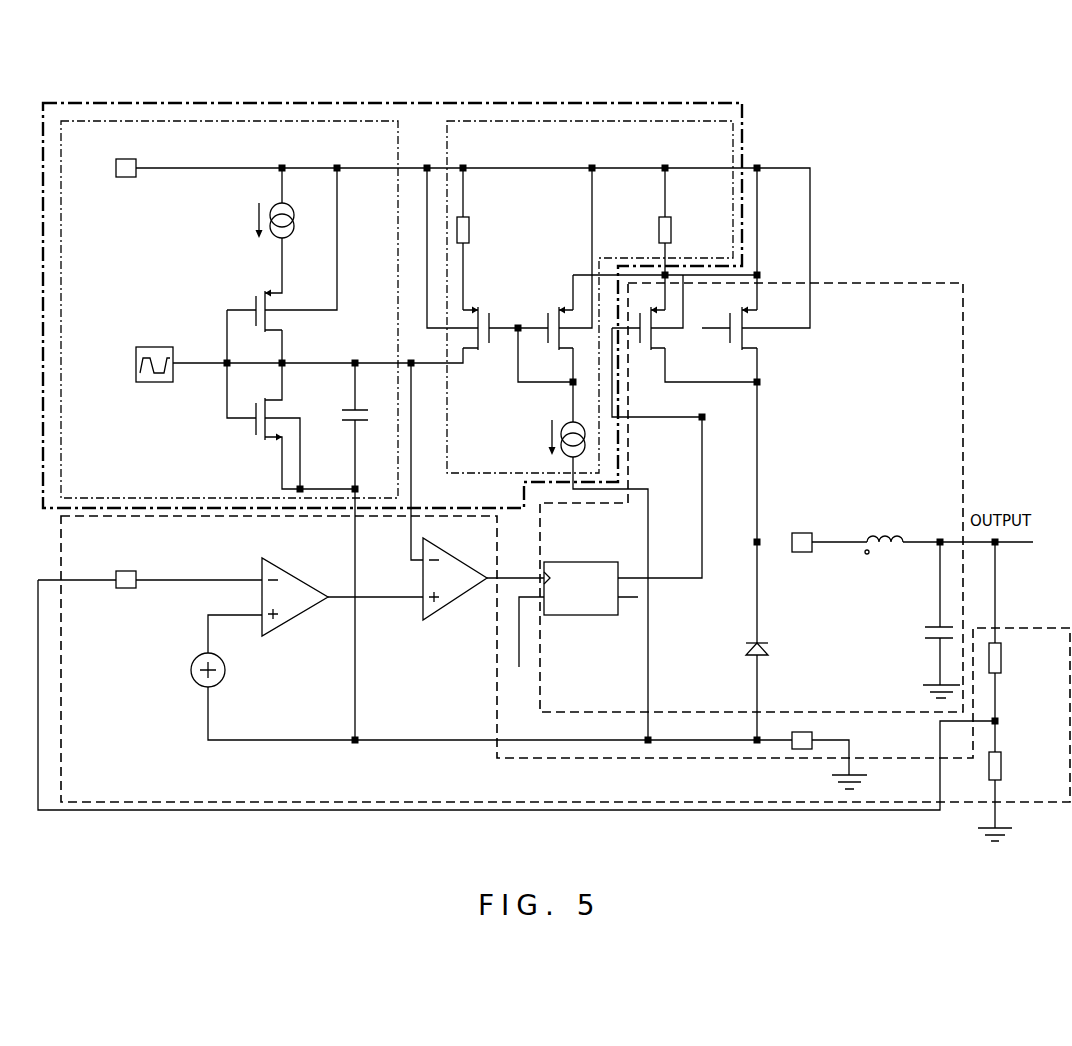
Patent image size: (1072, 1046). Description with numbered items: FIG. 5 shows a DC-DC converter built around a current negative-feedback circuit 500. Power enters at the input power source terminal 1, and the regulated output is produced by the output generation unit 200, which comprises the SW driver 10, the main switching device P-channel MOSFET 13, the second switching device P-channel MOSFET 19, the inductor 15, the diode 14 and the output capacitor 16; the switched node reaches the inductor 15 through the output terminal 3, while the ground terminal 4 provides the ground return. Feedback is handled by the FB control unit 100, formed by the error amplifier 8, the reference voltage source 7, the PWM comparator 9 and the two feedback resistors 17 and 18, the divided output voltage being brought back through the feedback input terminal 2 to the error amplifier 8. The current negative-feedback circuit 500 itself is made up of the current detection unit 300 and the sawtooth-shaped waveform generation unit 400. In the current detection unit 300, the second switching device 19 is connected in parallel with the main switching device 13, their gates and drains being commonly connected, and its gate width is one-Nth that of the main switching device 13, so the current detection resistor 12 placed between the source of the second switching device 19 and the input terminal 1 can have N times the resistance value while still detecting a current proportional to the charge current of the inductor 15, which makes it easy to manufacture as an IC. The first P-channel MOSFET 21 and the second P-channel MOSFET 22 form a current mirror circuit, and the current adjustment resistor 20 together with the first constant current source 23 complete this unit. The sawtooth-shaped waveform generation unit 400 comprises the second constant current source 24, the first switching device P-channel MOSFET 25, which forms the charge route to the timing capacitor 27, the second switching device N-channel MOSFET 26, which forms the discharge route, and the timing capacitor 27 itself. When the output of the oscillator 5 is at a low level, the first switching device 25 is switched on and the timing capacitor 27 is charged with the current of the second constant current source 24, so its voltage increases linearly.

The input power source terminal VIN 1 is at (116, 168).
The FB-IN feedback input terminal 2 is at (116, 580).
The OUT output terminal 3 is at (802, 552).
The GND ground terminal 4 is at (812, 732).
The oscillator 5 is at (136, 363).
The reference voltage VREF1 7 is at (196, 683).
The Error Amp 8 is at (294, 619).
The PWM Comp 9 is at (463, 597).
The SW driver 10 is at (585, 615).
The current detection resistor R1 12 is at (671, 228).
The switching device P-ch MOSFET Q1 13 is at (736, 348).
The diode D1 14 is at (746, 650).
The inductor L1 15 is at (880, 525).
The output capacitor Cout 16 is at (925, 627).
The resistor R3 17 is at (1001, 665).
The resistor R2 18 is at (1001, 770).
The second switching device P-ch MOSFET Q6 19 is at (645, 350).
The current adjustment resistor R4 20 is at (469, 229).
The first P-ch MOSFET Q2 21 is at (551, 348).
The second P-ch MOSFET Q3 22 is at (480, 351).
The constant current source I1 23 is at (547, 440).
The constant current source I2 24 is at (253, 222).
The P-ch MOSFET Q5 25 is at (251, 300).
The N-ch MOSFET Q4 26 is at (262, 440).
The capacitor C1 27 is at (368, 423).
The FB control unit 100 is at (768, 802).
The output generation unit 200 is at (887, 283).
The current detection unit 300 is at (553, 121).
The sawtooth-shaped waveform generation unit 400 is at (180, 122).
The current negative-feedback circuit 500 is at (340, 103).